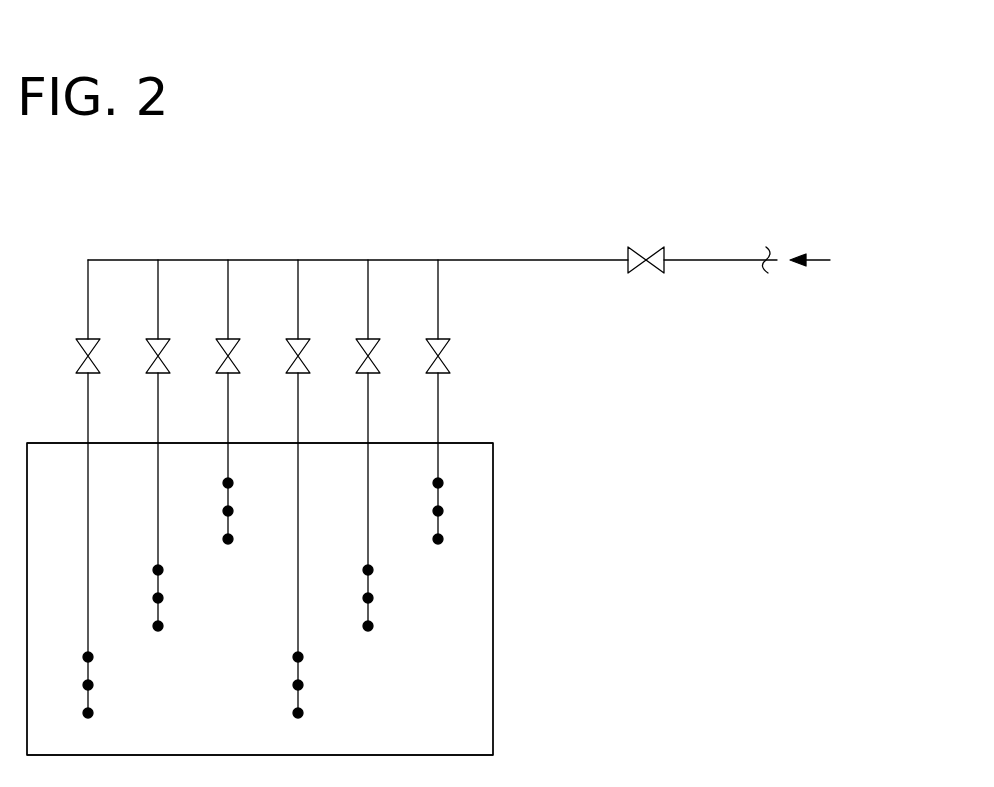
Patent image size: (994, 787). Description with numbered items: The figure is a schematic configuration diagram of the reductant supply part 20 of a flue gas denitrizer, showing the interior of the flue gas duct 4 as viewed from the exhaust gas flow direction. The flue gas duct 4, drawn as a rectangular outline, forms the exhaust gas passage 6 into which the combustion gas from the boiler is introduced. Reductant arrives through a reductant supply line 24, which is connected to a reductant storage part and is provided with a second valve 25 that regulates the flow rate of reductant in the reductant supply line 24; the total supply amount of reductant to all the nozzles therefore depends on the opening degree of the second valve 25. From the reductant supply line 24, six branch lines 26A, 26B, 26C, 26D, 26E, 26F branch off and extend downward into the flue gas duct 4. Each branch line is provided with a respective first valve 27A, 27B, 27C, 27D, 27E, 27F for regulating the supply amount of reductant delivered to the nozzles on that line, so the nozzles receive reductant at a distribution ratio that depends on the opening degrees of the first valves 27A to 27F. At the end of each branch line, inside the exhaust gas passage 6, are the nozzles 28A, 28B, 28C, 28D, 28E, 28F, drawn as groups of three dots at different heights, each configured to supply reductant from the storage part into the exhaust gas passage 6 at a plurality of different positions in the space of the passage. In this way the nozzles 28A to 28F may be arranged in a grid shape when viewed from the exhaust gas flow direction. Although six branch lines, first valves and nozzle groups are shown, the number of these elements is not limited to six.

The reductant supply part 20 is at (754, 84).
The reductant supply line 24 is at (536, 260).
The second valve 25 is at (652, 247).
The branch line 26A is at (438, 297).
The branch line 26B is at (368, 297).
The branch line 26C is at (298, 297).
The branch line 26D is at (228, 297).
The branch line 26E is at (158, 297).
The branch line 26F is at (88, 297).
The first valve 27A is at (444, 376).
The first valve 27B is at (374, 376).
The first valve 27C is at (304, 376).
The first valve 27D is at (234, 376).
The first valve 27E is at (164, 376).
The first valve 27F is at (94, 376).
The nozzle 28A is at (444, 481).
The nozzle 28B is at (377, 563).
The nozzle 28C is at (307, 650).
The nozzle 28D is at (237, 476).
The nozzle 28E is at (167, 563).
The nozzle 28F is at (97, 650).
The flue gas duct 4 is at (493, 617).
The exhaust gas passage 6 is at (475, 707).